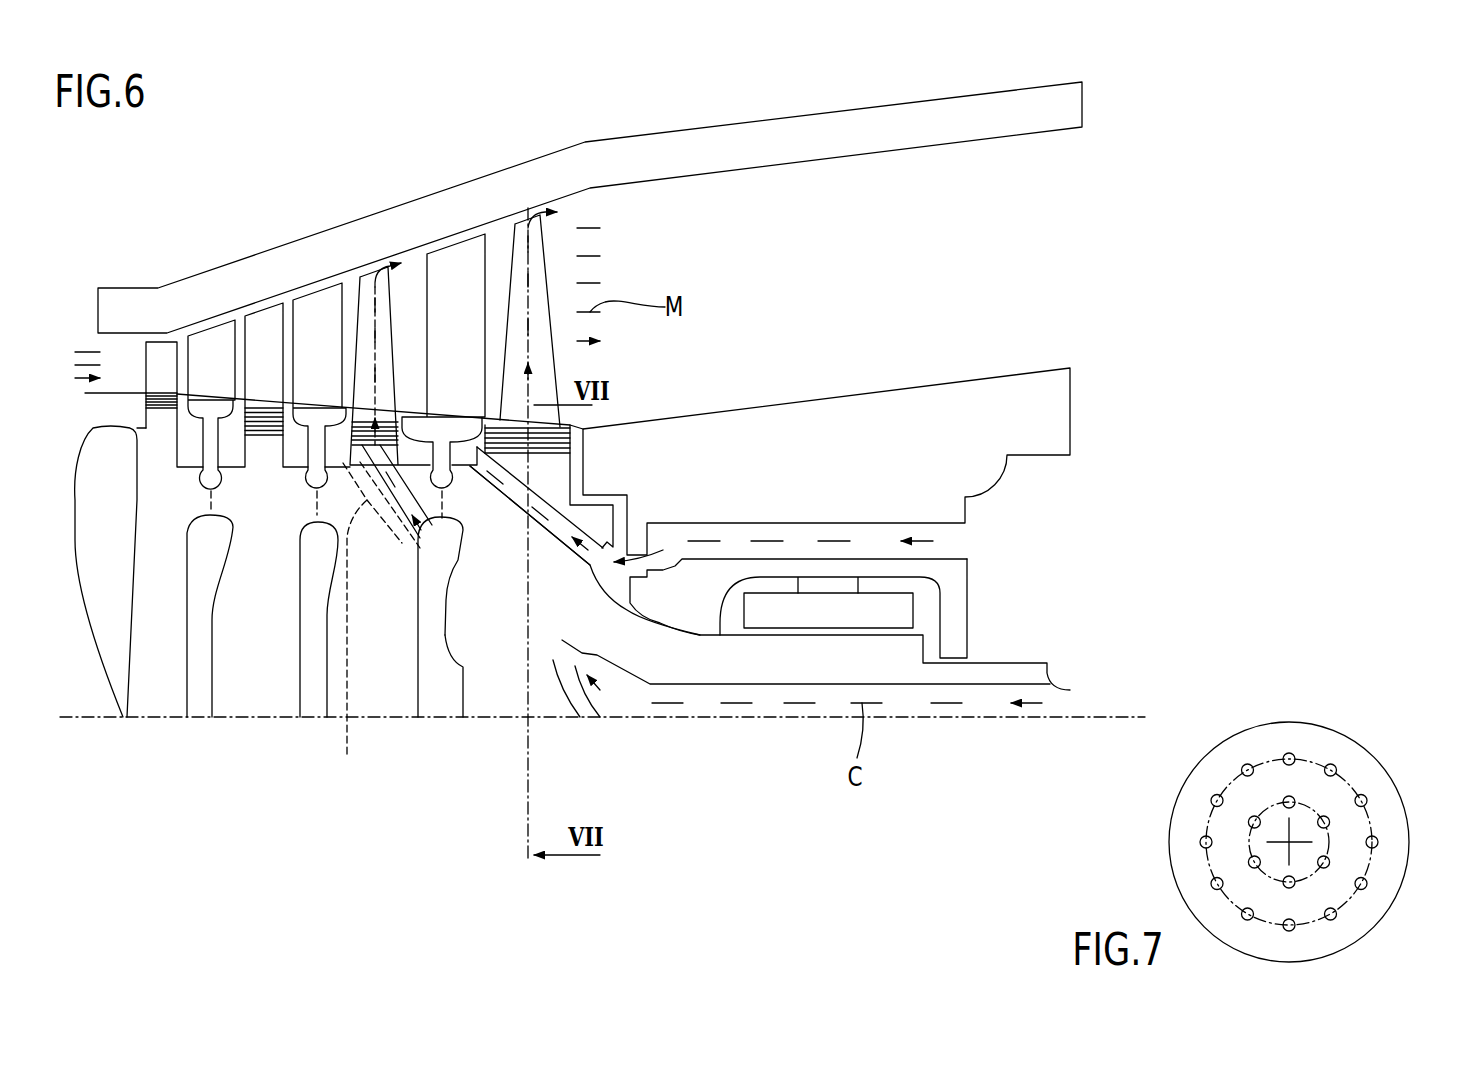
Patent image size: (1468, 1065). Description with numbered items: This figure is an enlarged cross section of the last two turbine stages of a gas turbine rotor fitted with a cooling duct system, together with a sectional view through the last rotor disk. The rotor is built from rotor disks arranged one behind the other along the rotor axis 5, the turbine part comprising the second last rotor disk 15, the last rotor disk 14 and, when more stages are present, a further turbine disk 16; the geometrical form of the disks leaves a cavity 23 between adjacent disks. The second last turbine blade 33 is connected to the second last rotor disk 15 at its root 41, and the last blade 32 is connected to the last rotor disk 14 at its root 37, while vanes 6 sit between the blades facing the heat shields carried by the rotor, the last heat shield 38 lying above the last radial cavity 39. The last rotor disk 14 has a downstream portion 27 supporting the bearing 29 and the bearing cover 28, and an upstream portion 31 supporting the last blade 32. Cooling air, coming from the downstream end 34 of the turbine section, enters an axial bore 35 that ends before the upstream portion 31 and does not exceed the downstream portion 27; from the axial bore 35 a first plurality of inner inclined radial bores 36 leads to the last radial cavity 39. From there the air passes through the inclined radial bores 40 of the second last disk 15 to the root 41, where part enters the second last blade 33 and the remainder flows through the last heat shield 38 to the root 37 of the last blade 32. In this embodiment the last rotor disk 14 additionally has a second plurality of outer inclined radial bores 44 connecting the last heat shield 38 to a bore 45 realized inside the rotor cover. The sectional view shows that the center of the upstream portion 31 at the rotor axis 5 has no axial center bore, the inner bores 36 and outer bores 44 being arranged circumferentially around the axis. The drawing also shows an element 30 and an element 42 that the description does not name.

In FIG. 6, the rotor axis 5 is at (960, 722).
In FIG. 7, the rotor axis 5 is at (1262, 852).
In FIG. 6, the vanes 6 is at (313, 313).
In FIG. 6, the last rotor disk 14 is at (475, 683).
In FIG. 6, the second last rotor disk 15 is at (358, 652).
In FIG. 6, the turbine disk 16 is at (243, 652).
In FIG. 6, the cavity 23 is at (310, 671).
In FIG. 6, the downstream portion of the last rotor disk 27 is at (800, 676).
In FIG. 6, the bearing cover 28 is at (1000, 425).
In FIG. 6, the bearing 29 is at (887, 615).
In FIG. 6, the outer casing 30 is at (917, 150).
In FIG. 6, the upstream portion of the last rotor disk 31 is at (553, 700).
In FIG. 7, the upstream portion of the last rotor disk 31 is at (1337, 728).
In FIG. 6, the last blade 32 is at (517, 286).
In FIG. 6, the second last turbine blade 33 is at (367, 297).
In FIG. 6, the downstream end of the turbine section 34 is at (1072, 690).
In FIG. 6, the axial bore 35 is at (708, 687).
In FIG. 6, the first plurality of inclined radial bores 36 is at (576, 714).
In FIG. 7, the first plurality of inclined radial bores 36 is at (1290, 885).
In FIG. 6, the root of the last blade 37 is at (522, 420).
In FIG. 6, the last heat shield 38 is at (460, 283).
In FIG. 6, the last radial cavity 39 is at (462, 690).
In FIG. 6, the inclined radial bores 40 is at (383, 545).
In FIG. 6, the root of the second last blade 41 is at (390, 437).
In FIG. 6, the channel 42 is at (377, 625).
In FIG. 6, the second plurality of inclined radial bores 44 is at (575, 525).
In FIG. 7, the second plurality of inclined radial bores 44 is at (1213, 797).
In FIG. 6, the bore 45 is at (950, 515).